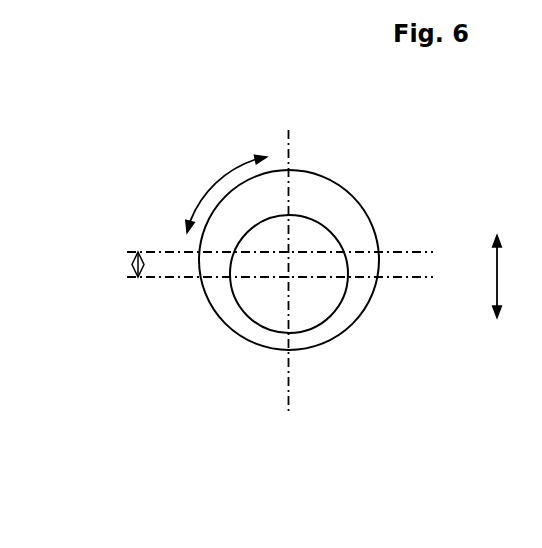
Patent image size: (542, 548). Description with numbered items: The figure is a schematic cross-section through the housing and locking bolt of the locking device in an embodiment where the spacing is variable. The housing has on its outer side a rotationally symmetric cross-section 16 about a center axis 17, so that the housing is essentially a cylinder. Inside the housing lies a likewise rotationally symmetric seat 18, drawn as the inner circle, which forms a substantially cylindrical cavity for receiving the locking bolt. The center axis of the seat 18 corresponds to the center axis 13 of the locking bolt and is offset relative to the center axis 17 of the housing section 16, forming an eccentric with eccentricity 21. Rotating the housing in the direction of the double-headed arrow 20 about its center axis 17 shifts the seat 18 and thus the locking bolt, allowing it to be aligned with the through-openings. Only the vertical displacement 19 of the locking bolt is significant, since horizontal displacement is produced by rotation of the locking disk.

The center axis 13 is at (289, 277).
The rotationally symmetric cross-section 16 is at (326, 166).
The center axis 17 is at (289, 252).
The seat 18 is at (312, 302).
The displacement 19 is at (514, 276).
The double-headed arrow 20 is at (226, 184).
The eccentricity 21 is at (110, 262).